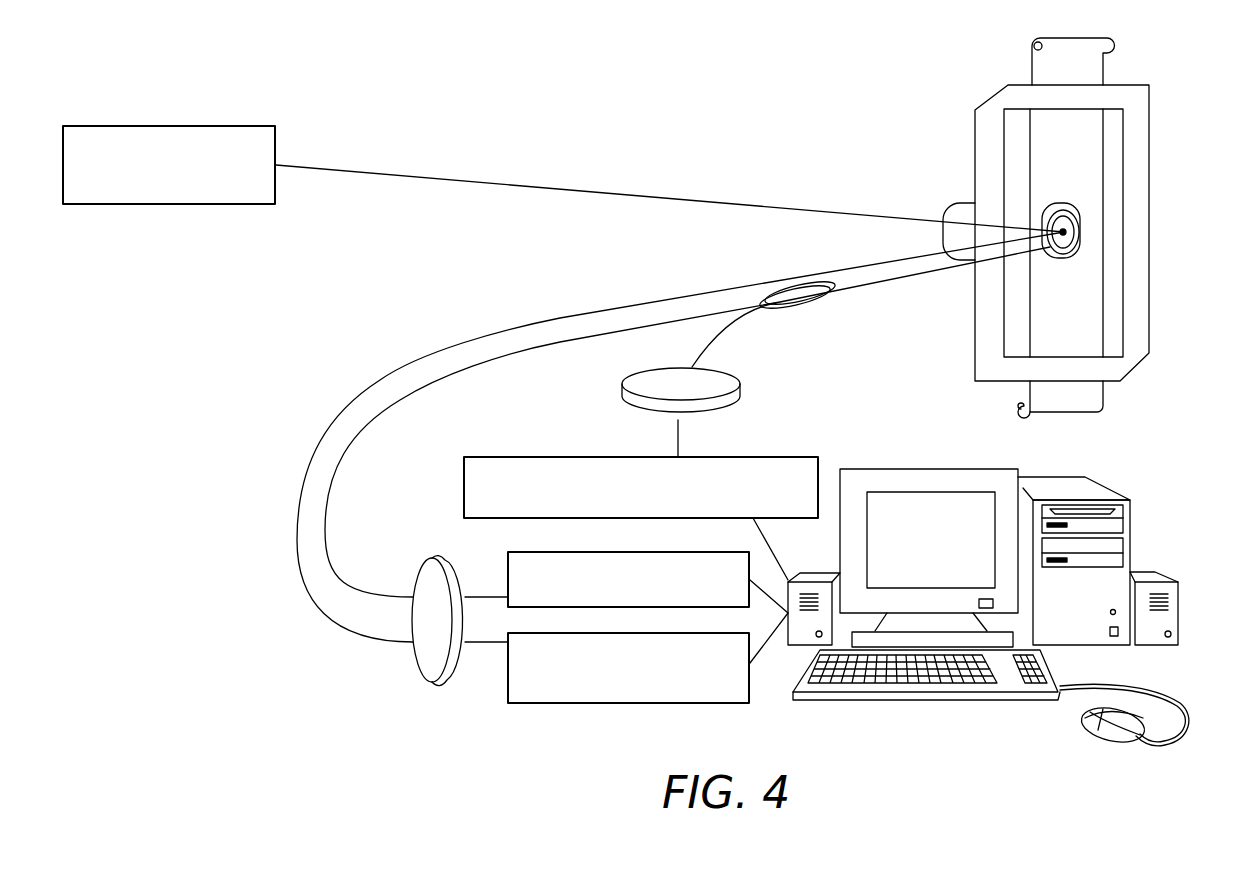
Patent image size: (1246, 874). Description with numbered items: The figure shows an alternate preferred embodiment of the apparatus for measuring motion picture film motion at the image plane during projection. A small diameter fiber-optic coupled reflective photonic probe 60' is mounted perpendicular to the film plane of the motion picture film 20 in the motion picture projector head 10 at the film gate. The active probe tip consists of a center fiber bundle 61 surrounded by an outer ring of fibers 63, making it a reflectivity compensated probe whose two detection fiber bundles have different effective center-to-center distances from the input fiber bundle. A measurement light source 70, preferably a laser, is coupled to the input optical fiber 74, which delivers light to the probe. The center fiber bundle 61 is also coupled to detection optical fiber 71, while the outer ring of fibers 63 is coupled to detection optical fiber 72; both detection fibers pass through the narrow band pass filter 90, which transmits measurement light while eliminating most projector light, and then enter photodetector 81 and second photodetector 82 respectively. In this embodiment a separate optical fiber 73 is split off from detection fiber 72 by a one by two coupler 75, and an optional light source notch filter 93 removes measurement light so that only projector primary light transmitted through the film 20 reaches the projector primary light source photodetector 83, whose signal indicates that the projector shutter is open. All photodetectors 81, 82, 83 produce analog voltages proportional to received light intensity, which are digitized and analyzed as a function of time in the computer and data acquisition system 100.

The motion picture projector head 10 is at (1058, 220).
The motion picture film 20 is at (1083, 173).
The reflective photonic probe 60' is at (930, 203).
The center fiber bundle 61 is at (1082, 216).
The outer ring of fibers 63 is at (1063, 250).
The measurement light source 70 is at (165, 126).
The detection optical fiber 71 is at (403, 393).
The detection optical fiber 72 is at (483, 338).
The optical fiber 73 is at (722, 344).
The input optical fiber 74 is at (668, 199).
The one by two coupler 75 is at (808, 301).
The photodetector 81 is at (508, 568).
The second photodetector 82 is at (620, 703).
The projector primary light source photodetector 83 is at (464, 488).
The narrow band pass filter 90 is at (418, 578).
The light source notch filter 93 is at (740, 400).
The computer and data acquisition system 100 is at (1158, 513).